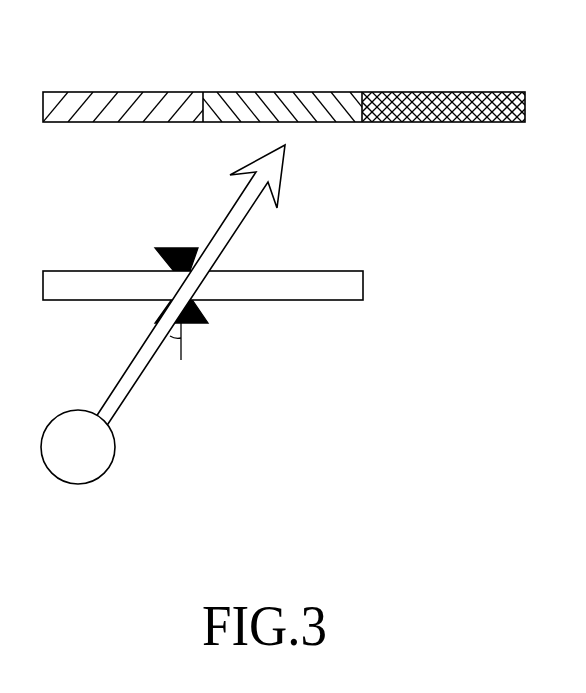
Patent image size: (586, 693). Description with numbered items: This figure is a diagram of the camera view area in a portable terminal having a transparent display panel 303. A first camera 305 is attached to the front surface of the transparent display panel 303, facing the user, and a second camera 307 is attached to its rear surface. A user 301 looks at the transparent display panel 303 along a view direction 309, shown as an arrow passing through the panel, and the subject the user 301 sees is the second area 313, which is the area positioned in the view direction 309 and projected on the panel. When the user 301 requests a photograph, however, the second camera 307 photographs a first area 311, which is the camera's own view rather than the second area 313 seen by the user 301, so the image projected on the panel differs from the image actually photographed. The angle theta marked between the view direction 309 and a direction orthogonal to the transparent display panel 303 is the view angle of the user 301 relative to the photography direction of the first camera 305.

The user 301 is at (108, 467).
The transparent display panel 303 is at (363, 282).
The first camera 305 is at (205, 321).
The second camera 307 is at (179, 248).
The view direction 309 is at (135, 385).
The first area 311 is at (362, 85).
The second area 313 is at (203, 127).